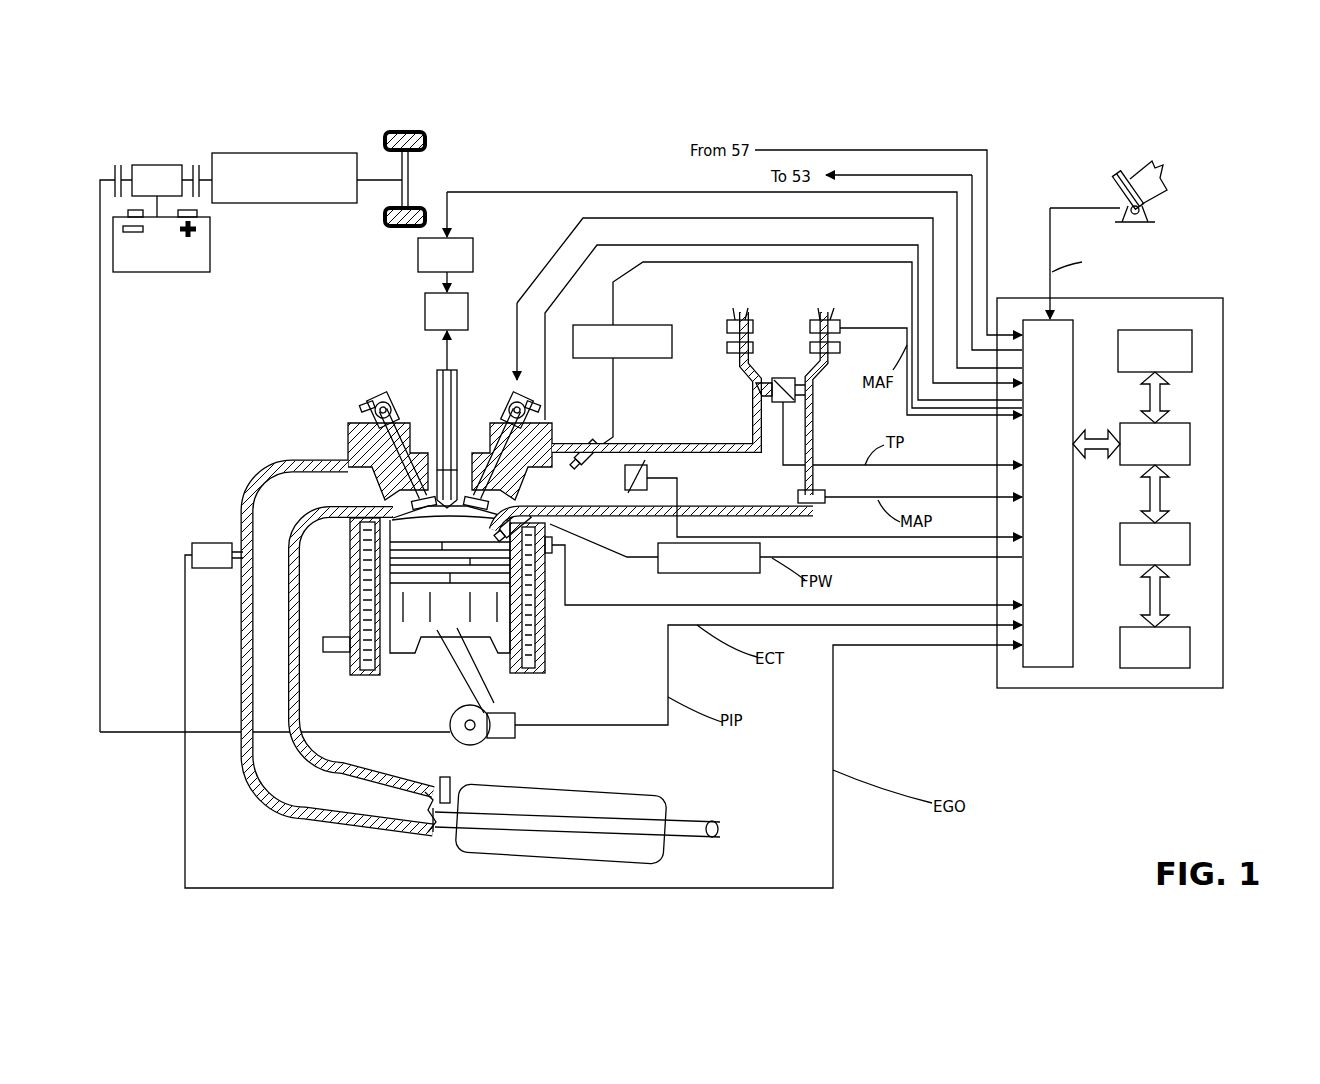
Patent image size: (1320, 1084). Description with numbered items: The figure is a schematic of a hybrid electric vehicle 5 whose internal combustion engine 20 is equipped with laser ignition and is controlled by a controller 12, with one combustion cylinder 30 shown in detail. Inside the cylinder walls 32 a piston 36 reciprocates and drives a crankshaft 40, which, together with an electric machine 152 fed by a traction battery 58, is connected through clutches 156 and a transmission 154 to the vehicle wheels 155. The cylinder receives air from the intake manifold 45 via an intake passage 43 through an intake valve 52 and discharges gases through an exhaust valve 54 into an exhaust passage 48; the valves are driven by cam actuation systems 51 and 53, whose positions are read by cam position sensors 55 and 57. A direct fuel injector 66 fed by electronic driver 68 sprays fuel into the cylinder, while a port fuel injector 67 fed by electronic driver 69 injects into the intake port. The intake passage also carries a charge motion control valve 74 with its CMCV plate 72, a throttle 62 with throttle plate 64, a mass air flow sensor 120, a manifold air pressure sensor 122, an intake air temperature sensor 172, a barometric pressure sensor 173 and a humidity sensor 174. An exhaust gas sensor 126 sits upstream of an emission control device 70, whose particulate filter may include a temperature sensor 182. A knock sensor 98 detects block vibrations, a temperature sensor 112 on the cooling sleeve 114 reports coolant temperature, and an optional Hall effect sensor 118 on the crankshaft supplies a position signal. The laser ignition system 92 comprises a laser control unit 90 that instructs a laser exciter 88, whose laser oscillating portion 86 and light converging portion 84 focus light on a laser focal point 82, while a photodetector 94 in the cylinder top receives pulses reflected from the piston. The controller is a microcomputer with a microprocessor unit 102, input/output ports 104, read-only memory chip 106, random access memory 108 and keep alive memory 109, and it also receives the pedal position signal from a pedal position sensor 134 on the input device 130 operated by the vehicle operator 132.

The hybrid electric vehicle 5 is at (1247, 178).
The controller 12 is at (1210, 298).
The internal combustion engine 20 is at (300, 432).
The combustion cylinder 30 is at (400, 535).
The combustion cylinder walls 32 is at (375, 672).
The piston 36 is at (432, 652).
The crankshaft 40 is at (458, 742).
The intake passage 43 is at (796, 403).
The intake manifold 45 is at (653, 498).
The exhaust passage 48 is at (340, 648).
The cam actuation system 51 is at (515, 400).
The intake valve 52 is at (500, 492).
The cam actuation system 53 is at (385, 400).
The exhaust valve 54 is at (405, 500).
The cam position sensor 55 is at (525, 403).
The cam position sensor 57 is at (368, 404).
The traction battery 58 is at (170, 272).
The throttle 62 is at (797, 390).
The throttle plate 64 is at (762, 388).
The fuel injector 66 is at (540, 520).
The fuel injector 67 is at (598, 440).
The electronic driver 68 is at (680, 573).
The electronic driver 69 is at (585, 355).
The emission control device 70 is at (630, 790).
The CMCV plate 72 is at (630, 465).
The charge motion control valve 74 is at (647, 460).
The laser focal point 82 is at (392, 562).
The light converging portion 84 is at (457, 475).
The laser oscillating portion 86 is at (446, 311).
The laser exciter 88 is at (457, 372).
The laser control unit 90 is at (445, 255).
The laser ignition system 92 is at (492, 262).
The photodetector 94 is at (440, 405).
The knock sensor 98 is at (340, 653).
The microprocessor unit 102 is at (1190, 440).
The input/output ports 104 is at (1073, 330).
The read-only memory chip 106 is at (1192, 352).
The random access memory 108 is at (1190, 542).
The keep alive memory 109 is at (1190, 645).
The temperature sensor 112 is at (553, 548).
The cooling sleeve 114 is at (535, 625).
The Hall effect sensor 118 is at (515, 740).
The mass air flow sensor 120 is at (832, 320).
The manifold air pressure sensor 122 is at (825, 500).
The exhaust gas sensor 126 is at (214, 543).
The input device 130 is at (1118, 190).
The vehicle operator 132 is at (1163, 173).
The pedal position sensor 134 is at (1150, 210).
The electric machine 152 is at (176, 165).
The transmission 154 is at (282, 203).
The vehicle wheels 155 is at (418, 150).
The clutch 156 is at (114, 178).
The intake air temperature sensor 172 is at (840, 347).
The barometric pressure sensor 173 is at (727, 325).
The humidity sensor 174 is at (727, 347).
The temperature sensor 182 is at (452, 782).